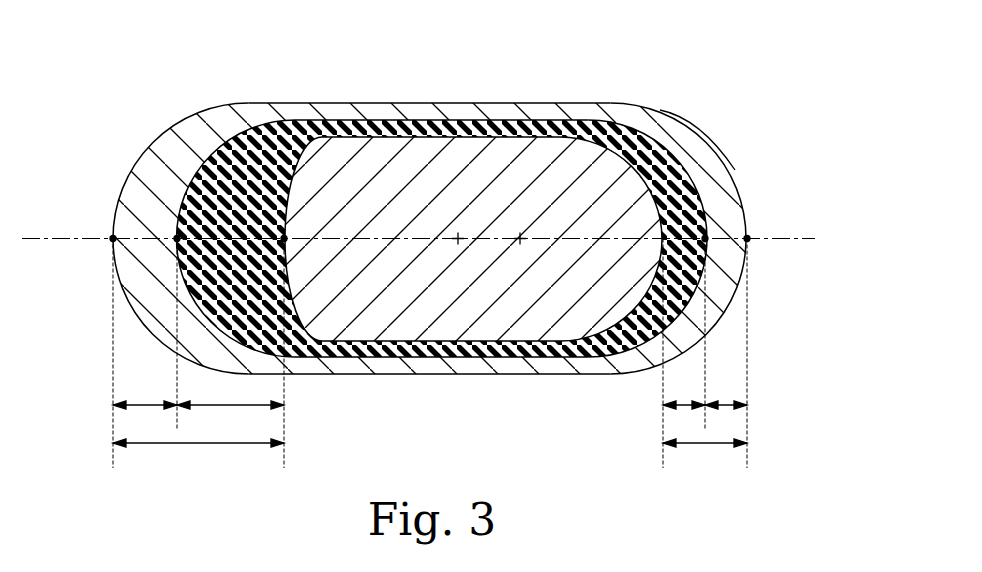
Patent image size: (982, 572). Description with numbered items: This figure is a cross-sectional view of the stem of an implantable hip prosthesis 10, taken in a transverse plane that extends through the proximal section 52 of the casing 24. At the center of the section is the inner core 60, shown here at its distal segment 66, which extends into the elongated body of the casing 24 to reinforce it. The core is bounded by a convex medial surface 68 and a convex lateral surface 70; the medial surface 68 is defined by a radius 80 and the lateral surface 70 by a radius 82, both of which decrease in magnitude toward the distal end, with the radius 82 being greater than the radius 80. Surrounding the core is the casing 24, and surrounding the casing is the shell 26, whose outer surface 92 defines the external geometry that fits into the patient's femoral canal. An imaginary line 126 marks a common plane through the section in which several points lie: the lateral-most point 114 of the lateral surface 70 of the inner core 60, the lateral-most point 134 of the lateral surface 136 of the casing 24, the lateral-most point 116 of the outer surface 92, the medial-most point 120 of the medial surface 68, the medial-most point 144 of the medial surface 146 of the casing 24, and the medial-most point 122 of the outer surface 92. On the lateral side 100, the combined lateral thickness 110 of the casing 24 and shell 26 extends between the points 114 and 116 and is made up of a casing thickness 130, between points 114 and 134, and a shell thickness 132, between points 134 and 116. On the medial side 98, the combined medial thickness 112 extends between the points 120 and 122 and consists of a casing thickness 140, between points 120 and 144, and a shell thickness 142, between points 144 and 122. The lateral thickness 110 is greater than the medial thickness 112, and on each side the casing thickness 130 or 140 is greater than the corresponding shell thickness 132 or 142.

The pipe assembly 10 is at (766, 82).
The lateral side 100 is at (114, 108).
The casing 24 is at (376, 126).
The shell 26 is at (723, 163).
The proximal section 52 is at (426, 124).
The inner core 60 is at (526, 140).
The distal segment 66 is at (478, 128).
The medial surface 68 is at (645, 135).
The lateral surface 70 is at (297, 132).
The radius 80 is at (645, 197).
The radius 82 is at (225, 180).
The outer surface 92 is at (734, 184).
The medial side 98 is at (732, 132).
The lateral thickness 110 is at (197, 447).
The medial thickness 112 is at (705, 447).
The lateral-most point 114 is at (287, 235).
The lateral-most point 116 is at (111, 236).
The medial-most point 120 is at (660, 234).
The medial-most point 122 is at (750, 235).
The imaginary line 126 is at (70, 244).
The thickness 130 is at (252, 407).
The thickness 132 is at (140, 407).
The lateral-most point 134 is at (168, 234).
The lateral surface 136 is at (172, 226).
The thickness 140 is at (685, 407).
The thickness 142 is at (722, 407).
The medial-most point 144 is at (733, 220).
The medial surface 146 is at (720, 245).